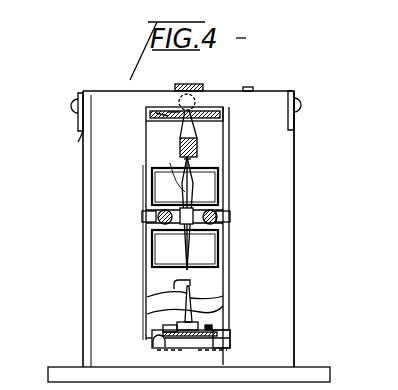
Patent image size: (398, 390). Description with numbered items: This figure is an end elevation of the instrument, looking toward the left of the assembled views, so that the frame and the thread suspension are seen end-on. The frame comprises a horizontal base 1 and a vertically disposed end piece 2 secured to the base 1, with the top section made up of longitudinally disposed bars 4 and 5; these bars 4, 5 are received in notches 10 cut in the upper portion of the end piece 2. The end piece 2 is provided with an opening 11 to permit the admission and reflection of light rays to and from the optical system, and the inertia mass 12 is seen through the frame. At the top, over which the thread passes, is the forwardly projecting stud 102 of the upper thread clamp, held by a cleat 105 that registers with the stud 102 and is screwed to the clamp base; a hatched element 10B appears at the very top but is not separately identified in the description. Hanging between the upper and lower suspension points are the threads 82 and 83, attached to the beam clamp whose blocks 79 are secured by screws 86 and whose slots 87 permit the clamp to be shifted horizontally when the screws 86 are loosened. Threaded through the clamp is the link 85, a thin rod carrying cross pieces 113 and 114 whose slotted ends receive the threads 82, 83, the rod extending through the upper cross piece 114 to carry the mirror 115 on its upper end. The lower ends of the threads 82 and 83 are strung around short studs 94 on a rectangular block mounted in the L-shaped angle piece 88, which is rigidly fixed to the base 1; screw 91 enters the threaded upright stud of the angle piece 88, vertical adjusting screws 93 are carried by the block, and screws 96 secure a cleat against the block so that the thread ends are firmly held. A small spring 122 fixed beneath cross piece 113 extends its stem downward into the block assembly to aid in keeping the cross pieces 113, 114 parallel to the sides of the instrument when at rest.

The horizontal base 1 is at (310, 366).
The end piece 2 is at (284, 230).
The longitudinal bar 4 is at (298, 93).
The longitudinal bar 5 is at (78, 96).
The notch 10 is at (78, 134).
The top block 10B is at (193, 85).
The opening 11 is at (230, 282).
The inertia mass 12 is at (212, 181).
The block 79 is at (150, 222).
The thread 82 is at (205, 311).
The thread 83 is at (130, 304).
The link 85 is at (190, 233).
The screw 86 is at (160, 212).
The slot 87 is at (155, 215).
The L-shaped angle piece 88 is at (230, 333).
The screw 91 is at (162, 326).
The vertical adjusting screw 93 is at (160, 331).
The stud 94 is at (156, 351).
The screw 96 is at (231, 342).
The stud 102 is at (176, 111).
The cleat 105 is at (165, 115).
The cross piece 113 is at (191, 280).
The cross piece 114 is at (190, 160).
The mirror 115 is at (198, 150).
The spring 122 is at (147, 297).